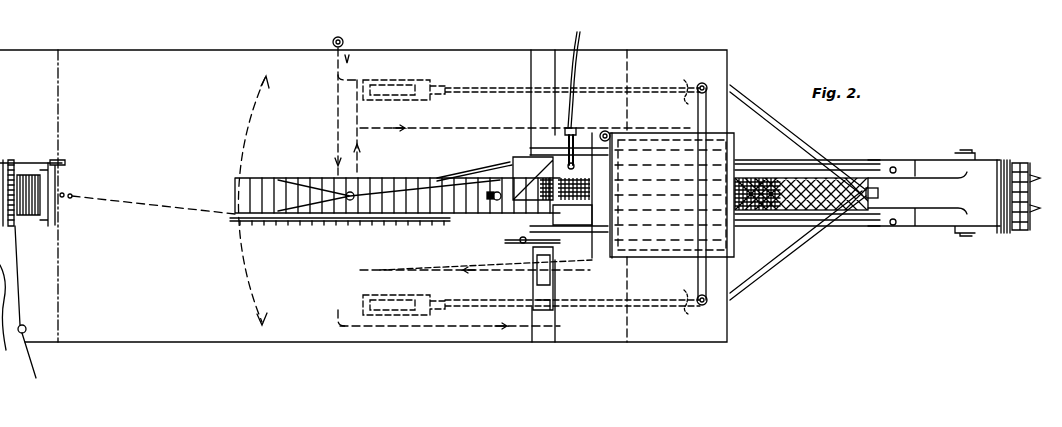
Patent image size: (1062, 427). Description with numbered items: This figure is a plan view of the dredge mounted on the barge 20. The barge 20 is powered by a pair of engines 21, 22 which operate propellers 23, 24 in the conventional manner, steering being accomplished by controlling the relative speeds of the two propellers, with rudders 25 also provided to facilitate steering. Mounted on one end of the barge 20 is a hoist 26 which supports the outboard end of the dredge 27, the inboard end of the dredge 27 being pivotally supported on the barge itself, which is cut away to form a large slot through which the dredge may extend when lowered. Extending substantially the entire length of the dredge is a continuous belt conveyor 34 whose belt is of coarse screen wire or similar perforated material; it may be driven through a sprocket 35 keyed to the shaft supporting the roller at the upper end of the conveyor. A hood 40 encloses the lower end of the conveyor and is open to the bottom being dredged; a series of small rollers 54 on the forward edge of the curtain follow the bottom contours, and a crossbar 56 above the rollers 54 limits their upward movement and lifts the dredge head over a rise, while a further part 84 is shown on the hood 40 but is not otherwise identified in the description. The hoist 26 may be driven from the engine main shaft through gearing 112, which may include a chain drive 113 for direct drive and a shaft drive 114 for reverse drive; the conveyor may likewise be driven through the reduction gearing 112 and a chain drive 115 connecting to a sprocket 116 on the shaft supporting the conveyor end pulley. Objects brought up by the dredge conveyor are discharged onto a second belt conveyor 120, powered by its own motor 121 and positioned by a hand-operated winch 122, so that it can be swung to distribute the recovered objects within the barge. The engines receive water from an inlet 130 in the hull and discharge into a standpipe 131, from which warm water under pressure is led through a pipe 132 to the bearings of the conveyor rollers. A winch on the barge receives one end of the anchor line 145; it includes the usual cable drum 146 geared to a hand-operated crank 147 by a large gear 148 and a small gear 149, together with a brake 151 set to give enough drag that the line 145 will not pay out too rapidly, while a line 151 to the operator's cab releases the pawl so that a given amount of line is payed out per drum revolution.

The barge 20 is at (125, 65).
The engine 21 is at (402, 312).
The engine 22 is at (400, 82).
The propeller 23 is at (688, 312).
The propeller 24 is at (686, 78).
The rudders 25 is at (720, 88).
The hoist 26 is at (870, 188).
The dredge 27 is at (1003, 154).
The continuous belt conveyor 34 is at (768, 200).
The sprocket 35 is at (520, 242).
The hood 40 is at (935, 228).
The rollers 54 is at (1035, 207).
The crossbar 56 is at (1024, 163).
The guide 84 is at (892, 225).
The gearing 112 is at (528, 145).
The chain drive 113 is at (564, 120).
The shaft drive 114 is at (607, 131).
The chain drive 115 is at (548, 250).
The sprocket 116 is at (505, 240).
The second belt conveyor 120 is at (265, 190).
The motor 121 is at (430, 178).
The hand-operated winch 122 is at (495, 190).
The inlet 130 is at (342, 40).
The standpipe 131 is at (578, 128).
The pipe 132 is at (772, 170).
The line 145 is at (32, 358).
The cable drum 146 is at (30, 214).
The hand-operated crank 147 is at (57, 163).
The large gear 148 is at (18, 240).
The small gear 149 is at (10, 160).
The brake 151 is at (58, 200).